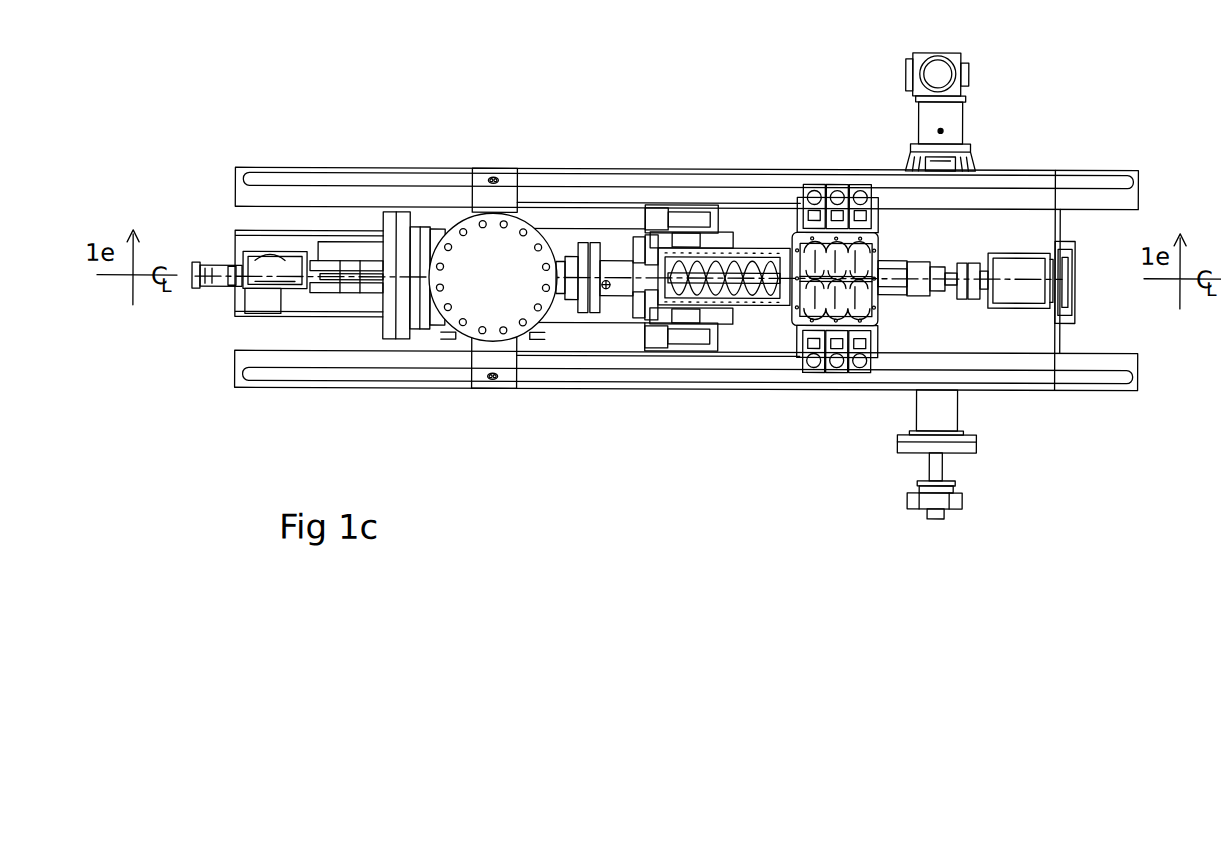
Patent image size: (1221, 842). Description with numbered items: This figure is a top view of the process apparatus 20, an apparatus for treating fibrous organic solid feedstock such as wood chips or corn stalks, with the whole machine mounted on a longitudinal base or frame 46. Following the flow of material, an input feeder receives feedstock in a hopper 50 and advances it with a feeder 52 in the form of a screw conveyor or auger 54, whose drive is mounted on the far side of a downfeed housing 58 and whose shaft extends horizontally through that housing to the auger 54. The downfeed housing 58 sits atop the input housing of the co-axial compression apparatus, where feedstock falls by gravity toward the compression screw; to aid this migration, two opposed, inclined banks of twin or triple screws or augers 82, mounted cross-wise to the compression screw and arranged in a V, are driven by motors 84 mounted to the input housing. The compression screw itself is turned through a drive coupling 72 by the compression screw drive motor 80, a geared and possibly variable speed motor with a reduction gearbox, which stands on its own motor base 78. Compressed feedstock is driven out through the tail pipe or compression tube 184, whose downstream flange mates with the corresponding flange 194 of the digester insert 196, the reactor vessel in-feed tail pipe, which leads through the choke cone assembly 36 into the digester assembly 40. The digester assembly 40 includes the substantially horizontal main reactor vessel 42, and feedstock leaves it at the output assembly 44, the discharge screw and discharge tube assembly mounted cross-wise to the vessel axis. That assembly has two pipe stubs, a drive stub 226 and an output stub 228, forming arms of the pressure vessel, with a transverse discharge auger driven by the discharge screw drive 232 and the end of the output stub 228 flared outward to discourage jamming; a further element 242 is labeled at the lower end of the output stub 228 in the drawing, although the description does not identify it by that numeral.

The process apparatus 20 is at (328, 78).
The choke cone assembly 36 is at (223, 262).
The digester assembly 40 is at (588, 323).
The main reactor vessel 42 is at (562, 323).
The output assembly 44 is at (947, 512).
The frame 46 is at (400, 171).
The hopper 50 is at (777, 252).
The feeder 52 is at (752, 275).
The auger 54 is at (730, 262).
The downfeed housing 58 is at (882, 242).
The drive coupling 72 is at (961, 268).
The motor base 78 is at (1076, 268).
The compression screw drive motor 80 is at (1013, 263).
The augers 82 is at (822, 247).
The motors 84 is at (829, 200).
The compression tube 184 is at (622, 263).
The flange 194 is at (589, 258).
The digester insert 196 is at (567, 262).
The drive stub 226 is at (952, 117).
The output stub 228 is at (953, 410).
The discharge screw drive 232 is at (968, 72).
The valve 242 is at (963, 498).